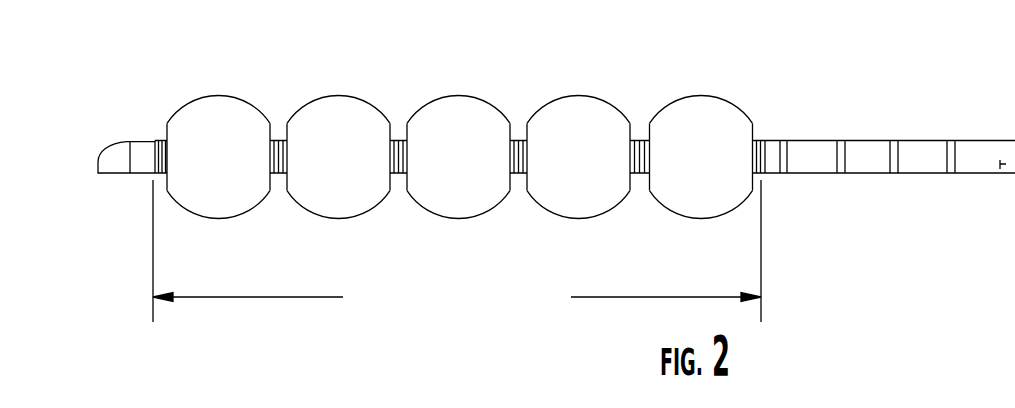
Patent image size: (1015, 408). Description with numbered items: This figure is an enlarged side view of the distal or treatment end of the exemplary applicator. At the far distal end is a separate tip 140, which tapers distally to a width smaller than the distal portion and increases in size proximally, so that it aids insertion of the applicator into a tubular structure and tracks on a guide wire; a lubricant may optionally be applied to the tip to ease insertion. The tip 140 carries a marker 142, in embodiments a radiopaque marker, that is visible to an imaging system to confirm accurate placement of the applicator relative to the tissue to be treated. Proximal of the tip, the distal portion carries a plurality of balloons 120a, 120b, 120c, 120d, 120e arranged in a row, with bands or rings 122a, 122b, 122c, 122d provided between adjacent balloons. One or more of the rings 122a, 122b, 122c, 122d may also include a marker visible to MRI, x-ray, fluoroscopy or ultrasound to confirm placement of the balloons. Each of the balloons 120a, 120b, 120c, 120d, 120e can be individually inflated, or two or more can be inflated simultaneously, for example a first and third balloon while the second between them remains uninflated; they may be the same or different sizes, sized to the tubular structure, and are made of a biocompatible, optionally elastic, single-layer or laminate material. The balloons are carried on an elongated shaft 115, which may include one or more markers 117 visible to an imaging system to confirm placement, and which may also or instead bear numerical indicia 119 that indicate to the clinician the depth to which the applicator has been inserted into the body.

The tip 140 is at (116, 157).
The marker 142 is at (158, 140).
The balloon 120a is at (241, 168).
The balloon 120b is at (361, 168).
The balloon 120c is at (481, 168).
The balloon 120d is at (601, 168).
The balloon 120e is at (724, 168).
The ring 122a is at (274, 138).
The ring 122b is at (398, 140).
The ring 122c is at (520, 140).
The ring 122d is at (642, 140).
The markers 117 is at (783, 140).
The numerical indicia 119 is at (1007, 140).
The elongated shaft 115 is at (922, 173).